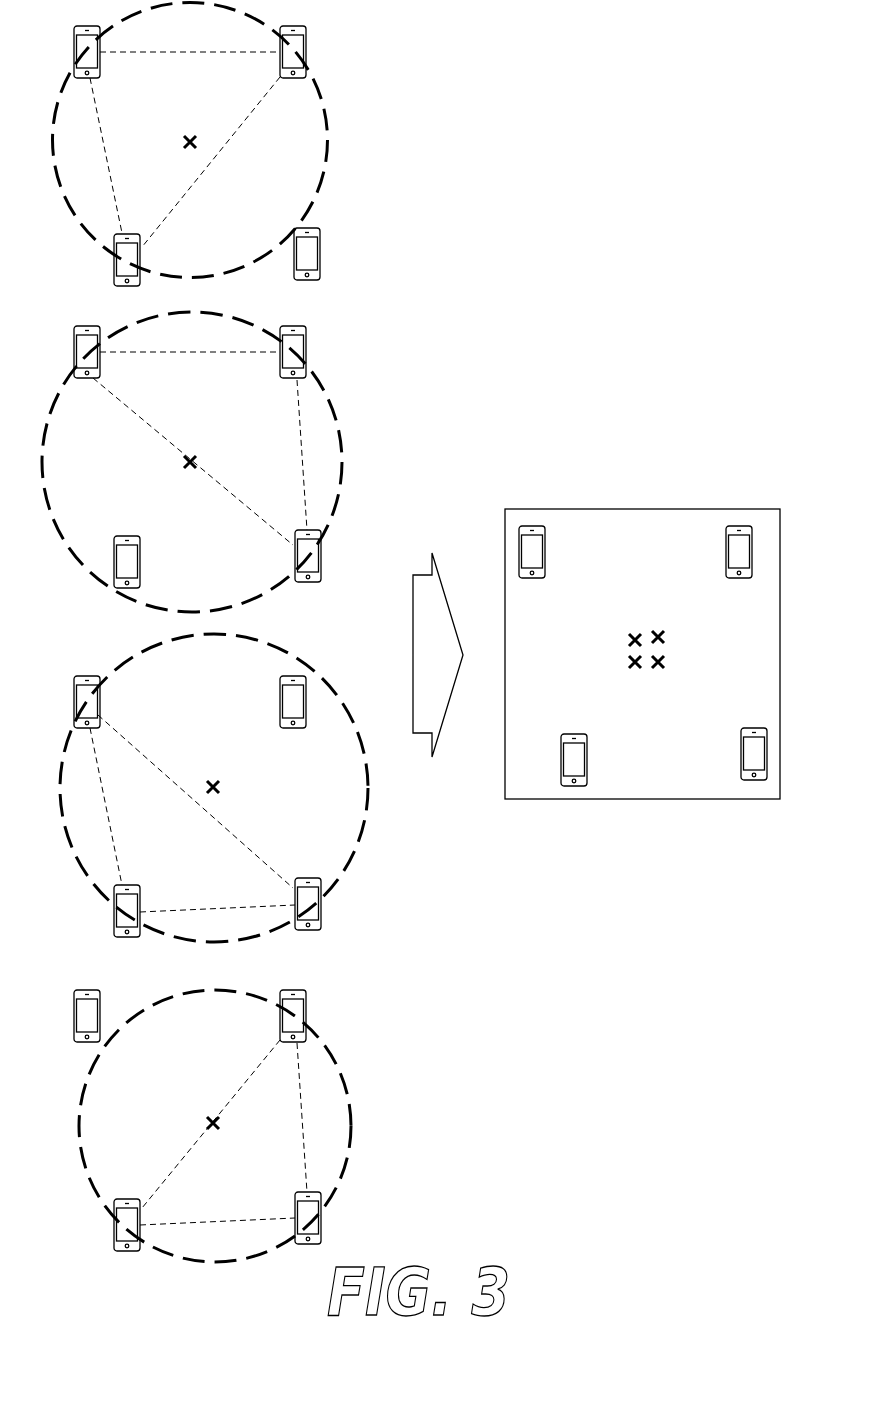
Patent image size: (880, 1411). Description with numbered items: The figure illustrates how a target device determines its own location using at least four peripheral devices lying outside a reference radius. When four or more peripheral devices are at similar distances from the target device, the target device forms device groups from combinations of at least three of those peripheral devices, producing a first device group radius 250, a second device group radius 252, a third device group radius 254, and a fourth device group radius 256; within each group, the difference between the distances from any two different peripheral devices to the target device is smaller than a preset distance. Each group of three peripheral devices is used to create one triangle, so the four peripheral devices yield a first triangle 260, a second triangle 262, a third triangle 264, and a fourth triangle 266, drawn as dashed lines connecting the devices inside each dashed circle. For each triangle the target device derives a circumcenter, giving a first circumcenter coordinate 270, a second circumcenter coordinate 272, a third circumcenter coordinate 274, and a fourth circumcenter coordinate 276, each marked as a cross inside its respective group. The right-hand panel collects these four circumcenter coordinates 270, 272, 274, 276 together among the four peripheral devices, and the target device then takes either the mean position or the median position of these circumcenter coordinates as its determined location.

The first device group radius 250 is at (327, 135).
The second device group radius 252 is at (342, 452).
The third device group radius 254 is at (363, 817).
The fourth device group radius 256 is at (350, 1117).
The first triangle 260 is at (233, 127).
The second triangle 262 is at (153, 430).
The third triangle 264 is at (247, 847).
The fourth triangle 266 is at (240, 1087).
The first circumcenter coordinate 270 is at (188, 132).
The second circumcenter coordinate 272 is at (187, 473).
The third circumcenter coordinate 274 is at (212, 783).
The fourth circumcenter coordinate 276 is at (220, 1123).